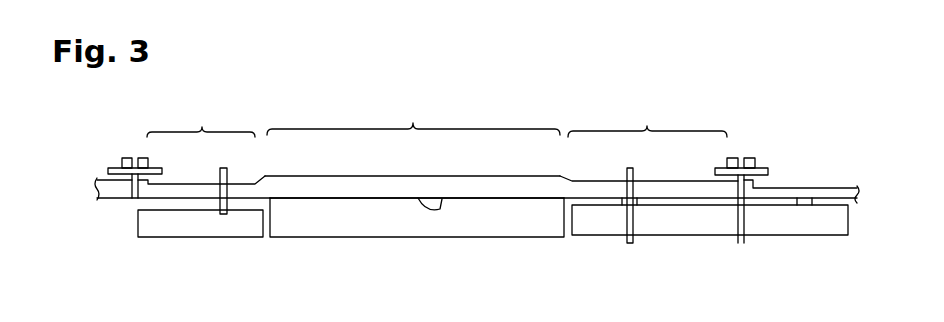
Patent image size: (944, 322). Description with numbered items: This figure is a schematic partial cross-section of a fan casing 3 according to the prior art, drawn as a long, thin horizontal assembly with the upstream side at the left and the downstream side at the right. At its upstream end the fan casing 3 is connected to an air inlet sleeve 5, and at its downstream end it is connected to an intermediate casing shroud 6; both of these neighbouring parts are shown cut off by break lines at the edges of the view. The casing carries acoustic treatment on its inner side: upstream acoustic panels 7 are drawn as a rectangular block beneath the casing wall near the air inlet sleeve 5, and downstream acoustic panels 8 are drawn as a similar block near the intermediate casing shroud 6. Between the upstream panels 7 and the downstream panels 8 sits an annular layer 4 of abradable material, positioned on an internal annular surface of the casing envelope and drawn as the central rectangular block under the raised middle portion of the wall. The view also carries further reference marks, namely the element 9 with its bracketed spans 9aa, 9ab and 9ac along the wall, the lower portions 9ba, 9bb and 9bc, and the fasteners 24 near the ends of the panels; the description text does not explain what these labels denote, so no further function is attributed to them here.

The fan casing 3 is at (343, 176).
The annular layer of abradable material 4 is at (447, 238).
The air inlet sleeve 5 is at (104, 181).
The intermediate casing shroud 6 is at (837, 187).
The upstream acoustic panels 7 is at (188, 238).
The downstream acoustic panels 8 is at (745, 236).
The heat conductive plate 9 is at (516, 192).
The first region of plate 9aa is at (201, 120).
The second region of plate 9ab is at (413, 117).
The third region of plate 9ac is at (647, 120).
The first contact portion 9ba is at (175, 190).
The second contact portion 9bb is at (442, 198).
The third contact portion 9bc is at (655, 203).
The fastening bolt 24 is at (218, 192).